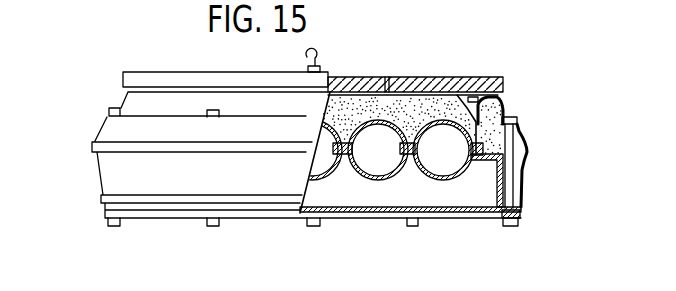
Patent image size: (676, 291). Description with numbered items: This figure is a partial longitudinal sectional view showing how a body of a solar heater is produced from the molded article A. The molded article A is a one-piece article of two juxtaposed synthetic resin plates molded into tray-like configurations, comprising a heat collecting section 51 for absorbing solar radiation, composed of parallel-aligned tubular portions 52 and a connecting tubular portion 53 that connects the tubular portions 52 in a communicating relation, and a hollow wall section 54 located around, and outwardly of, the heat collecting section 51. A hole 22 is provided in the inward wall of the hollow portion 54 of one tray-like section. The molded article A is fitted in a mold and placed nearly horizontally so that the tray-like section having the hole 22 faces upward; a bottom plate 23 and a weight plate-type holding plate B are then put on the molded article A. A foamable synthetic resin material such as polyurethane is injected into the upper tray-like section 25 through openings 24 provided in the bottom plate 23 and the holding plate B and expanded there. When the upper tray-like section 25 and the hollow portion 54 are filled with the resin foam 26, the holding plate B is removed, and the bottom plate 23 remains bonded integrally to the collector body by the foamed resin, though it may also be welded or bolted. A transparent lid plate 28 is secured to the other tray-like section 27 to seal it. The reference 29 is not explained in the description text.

The molded article A is at (96, 186).
The holding plate B is at (167, 77).
The hole 22 is at (481, 113).
The bottom plate 23 is at (485, 97).
The openings 24 is at (391, 77).
The upper tray-like section 25 is at (457, 93).
The resin foam 26 is at (340, 100).
The other tray-like section 27 is at (400, 196).
The transparent lid plate 28 is at (485, 217).
The vent tube with hook 29 is at (387, 77).
The heat collecting section 51 is at (463, 181).
The tubular portions 52 is at (313, 177).
The connecting tubular portion 53 is at (345, 153).
The hollow wall section 54 is at (520, 128).